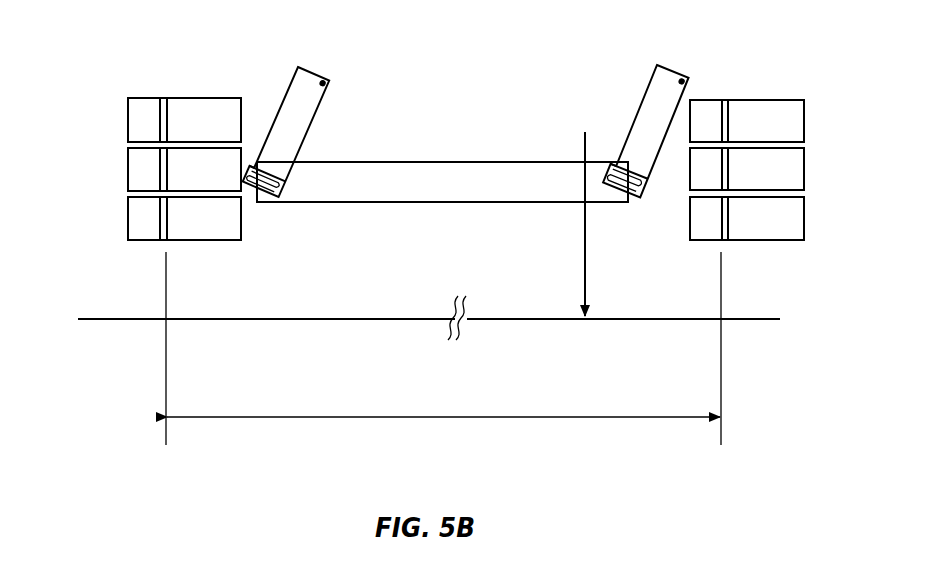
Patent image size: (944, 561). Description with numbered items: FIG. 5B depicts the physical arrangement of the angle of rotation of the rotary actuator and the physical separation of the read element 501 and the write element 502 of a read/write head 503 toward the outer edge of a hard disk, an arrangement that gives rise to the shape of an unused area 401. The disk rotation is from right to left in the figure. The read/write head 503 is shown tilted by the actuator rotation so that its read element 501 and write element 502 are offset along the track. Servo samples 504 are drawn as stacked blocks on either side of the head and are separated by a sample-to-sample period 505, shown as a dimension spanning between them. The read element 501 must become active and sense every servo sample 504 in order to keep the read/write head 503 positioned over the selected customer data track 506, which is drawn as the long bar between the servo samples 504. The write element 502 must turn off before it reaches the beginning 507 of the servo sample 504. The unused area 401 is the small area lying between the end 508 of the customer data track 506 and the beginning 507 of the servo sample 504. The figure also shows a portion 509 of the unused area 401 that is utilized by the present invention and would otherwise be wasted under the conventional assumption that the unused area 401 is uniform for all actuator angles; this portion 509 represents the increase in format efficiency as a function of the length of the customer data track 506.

The unused area 401 is at (634, 240).
The read element 501 is at (329, 85).
The write element 502 is at (276, 202).
The read/write head 503 is at (302, 66).
The servo samples 504 is at (128, 122).
The sample-to-sample period 505 is at (475, 418).
The customer data track 506 is at (425, 162).
The beginning of the servo sample 507 is at (752, 256).
The end of customer data track 508 is at (583, 268).
The portion of unused area 509 is at (604, 167).